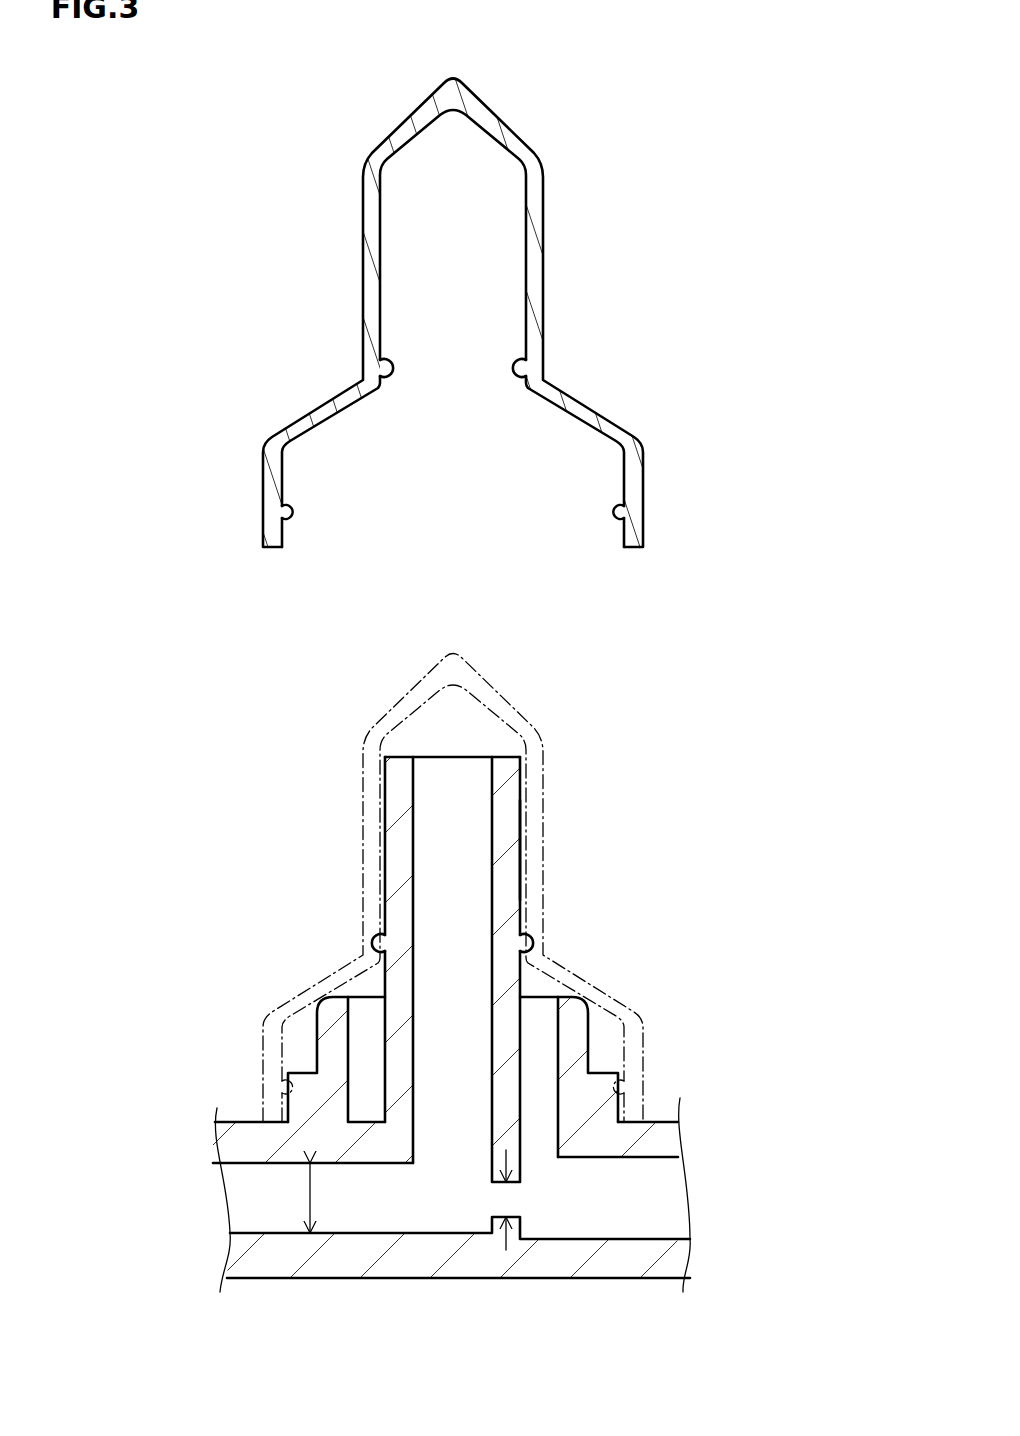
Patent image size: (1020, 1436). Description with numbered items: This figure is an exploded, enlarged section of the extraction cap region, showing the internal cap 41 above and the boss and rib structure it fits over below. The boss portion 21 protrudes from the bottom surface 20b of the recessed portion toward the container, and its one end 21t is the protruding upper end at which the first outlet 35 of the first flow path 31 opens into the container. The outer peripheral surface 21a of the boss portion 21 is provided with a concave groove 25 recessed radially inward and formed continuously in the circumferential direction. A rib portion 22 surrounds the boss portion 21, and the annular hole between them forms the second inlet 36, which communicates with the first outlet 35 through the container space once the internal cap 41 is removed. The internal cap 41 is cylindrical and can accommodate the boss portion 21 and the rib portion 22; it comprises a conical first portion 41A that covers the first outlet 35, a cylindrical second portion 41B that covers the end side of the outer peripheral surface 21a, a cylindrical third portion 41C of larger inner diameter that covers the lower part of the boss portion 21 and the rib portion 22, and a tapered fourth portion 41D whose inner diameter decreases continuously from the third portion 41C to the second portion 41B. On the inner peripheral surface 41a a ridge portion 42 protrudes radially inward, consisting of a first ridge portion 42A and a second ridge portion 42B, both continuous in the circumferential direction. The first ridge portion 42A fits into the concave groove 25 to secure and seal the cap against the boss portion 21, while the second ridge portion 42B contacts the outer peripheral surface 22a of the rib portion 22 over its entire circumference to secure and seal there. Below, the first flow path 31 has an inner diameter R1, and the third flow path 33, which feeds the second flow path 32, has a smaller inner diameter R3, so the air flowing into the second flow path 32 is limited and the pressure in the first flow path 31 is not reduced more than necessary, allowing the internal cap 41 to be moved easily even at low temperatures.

The internal cap 41 is at (748, 97).
The first portion 41A is at (505, 123).
The second portion 41B is at (544, 237).
The third portion 41C is at (644, 495).
The fourth portion 41D is at (572, 385).
The inner peripheral surface 41a is at (380, 307).
The ridge portion 42 is at (455, 587).
The first ridge portion 42A is at (389, 383).
The second ridge portion 42B is at (291, 513).
The boss portion 21 is at (523, 793).
The one end of boss portion 21t is at (508, 753).
The outer peripheral surface of boss portion 21a is at (522, 853).
The concave groove 25 is at (526, 940).
The first outlet 35 is at (456, 754).
The second inlet 36 is at (543, 995).
The rib portion 22 is at (591, 1060).
The outer peripheral surface of rib portion 22a is at (668, 1120).
The bottom surface of recessed portion 20b is at (681, 1100).
The first flow path 31 is at (275, 1202).
The second flow path 32 is at (631, 1216).
The third flow path 33 is at (497, 1200).
The inner diameter of first flow path R1 is at (312, 1200).
The inner diameter of third flow path R3 is at (507, 1198).